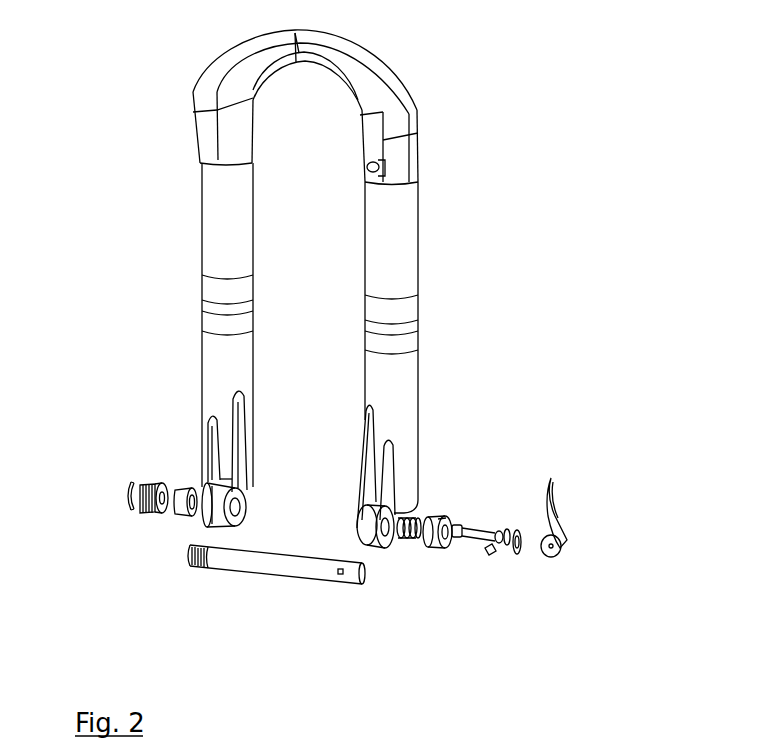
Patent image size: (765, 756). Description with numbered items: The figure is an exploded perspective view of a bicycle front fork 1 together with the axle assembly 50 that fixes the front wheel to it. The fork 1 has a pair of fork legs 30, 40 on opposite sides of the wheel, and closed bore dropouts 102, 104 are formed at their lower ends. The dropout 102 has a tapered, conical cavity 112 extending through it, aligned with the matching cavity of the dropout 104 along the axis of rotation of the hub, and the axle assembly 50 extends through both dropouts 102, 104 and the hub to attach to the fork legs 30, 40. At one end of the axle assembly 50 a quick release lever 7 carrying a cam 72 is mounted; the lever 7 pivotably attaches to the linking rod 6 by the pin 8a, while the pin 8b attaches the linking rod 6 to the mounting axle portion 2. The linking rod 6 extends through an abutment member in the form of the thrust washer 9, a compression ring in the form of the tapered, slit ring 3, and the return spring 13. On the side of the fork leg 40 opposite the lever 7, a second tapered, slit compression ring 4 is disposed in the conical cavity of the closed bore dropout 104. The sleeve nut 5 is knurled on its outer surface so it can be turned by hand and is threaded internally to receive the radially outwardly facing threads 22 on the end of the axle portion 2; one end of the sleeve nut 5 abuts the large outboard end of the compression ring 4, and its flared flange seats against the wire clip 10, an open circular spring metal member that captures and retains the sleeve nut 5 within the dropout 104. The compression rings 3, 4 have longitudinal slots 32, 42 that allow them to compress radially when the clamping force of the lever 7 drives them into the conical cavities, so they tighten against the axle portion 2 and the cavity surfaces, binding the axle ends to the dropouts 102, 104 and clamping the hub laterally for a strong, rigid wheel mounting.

The front fork 1 is at (323, 34).
The fork leg 40 is at (188, 270).
The fork leg 30 is at (428, 270).
The compression ring 4 is at (180, 513).
The closed bore dropout 104 is at (210, 512).
The longitudinal slot 42 is at (182, 487).
The sleeve nut 5 is at (132, 483).
The wire clip 10 is at (122, 497).
The mounting axle portion 2 is at (257, 600).
The threads 22 is at (194, 566).
The closed bore dropout 102 is at (370, 532).
The conical cavity 112 is at (386, 532).
The return spring 13 is at (408, 539).
The axle assembly 50 is at (565, 501).
The compression ring 3 is at (441, 548).
The longitudinal slot 32 is at (442, 518).
The pin 8b is at (448, 548).
The pin 8a is at (493, 556).
The linking rod 6 is at (506, 534).
The thrust washer 9 is at (522, 528).
The quick release lever 7 is at (594, 544).
The cam 72 is at (549, 554).